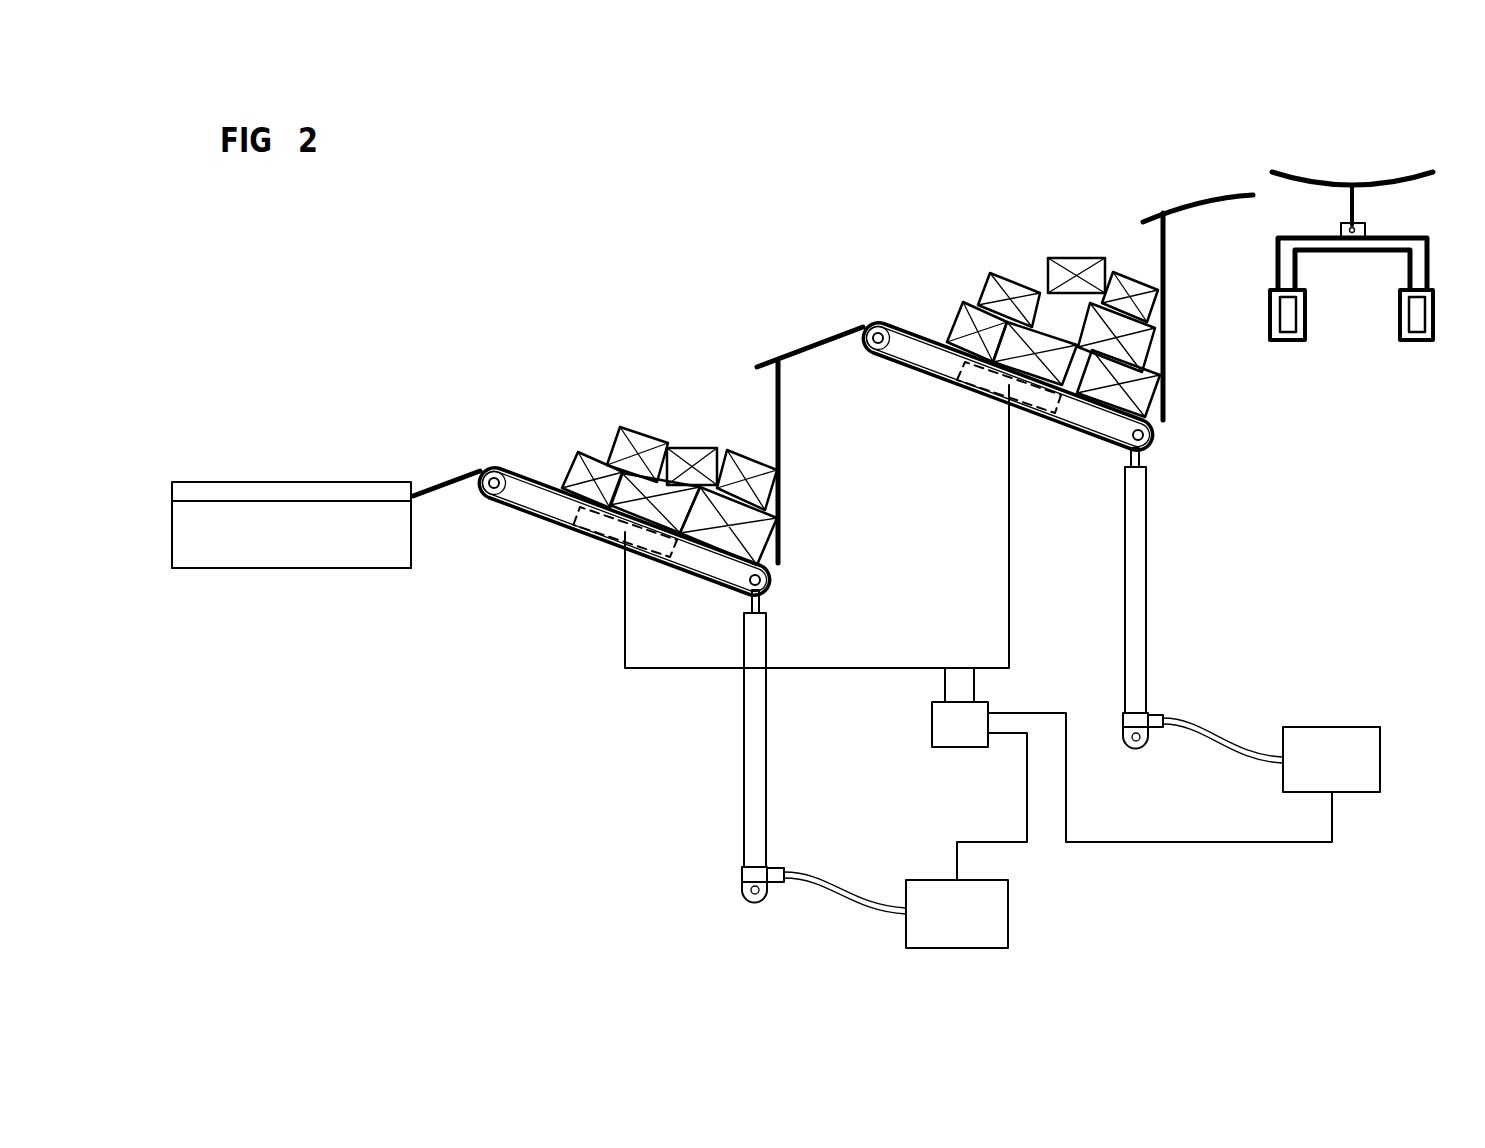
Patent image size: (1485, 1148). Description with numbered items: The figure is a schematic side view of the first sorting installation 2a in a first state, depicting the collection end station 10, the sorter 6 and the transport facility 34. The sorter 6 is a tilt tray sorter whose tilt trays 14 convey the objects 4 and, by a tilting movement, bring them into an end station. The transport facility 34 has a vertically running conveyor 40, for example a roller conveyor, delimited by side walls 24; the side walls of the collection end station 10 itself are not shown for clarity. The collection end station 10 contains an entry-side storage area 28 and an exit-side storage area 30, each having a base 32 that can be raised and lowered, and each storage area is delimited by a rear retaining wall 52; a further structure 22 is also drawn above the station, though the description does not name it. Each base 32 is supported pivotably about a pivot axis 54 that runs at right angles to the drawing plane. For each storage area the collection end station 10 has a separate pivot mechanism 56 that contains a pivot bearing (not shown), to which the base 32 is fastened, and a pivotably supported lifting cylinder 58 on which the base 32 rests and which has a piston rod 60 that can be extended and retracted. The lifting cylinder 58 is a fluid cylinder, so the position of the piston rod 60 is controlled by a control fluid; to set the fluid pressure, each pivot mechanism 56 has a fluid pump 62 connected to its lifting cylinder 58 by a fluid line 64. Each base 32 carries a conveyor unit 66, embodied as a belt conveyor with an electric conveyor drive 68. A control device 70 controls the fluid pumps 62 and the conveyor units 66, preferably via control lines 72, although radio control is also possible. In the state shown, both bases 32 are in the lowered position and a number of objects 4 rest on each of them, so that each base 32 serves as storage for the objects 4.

The first sorting installation 2a is at (862, 198).
The objects 4 is at (628, 437).
The sorter 6 is at (1414, 125).
The collection end station 10 is at (582, 250).
The tilt trays 14 is at (1305, 170).
The roof 22 is at (818, 343).
The side walls 24 is at (178, 494).
The entry-side storage area 28 is at (1003, 240).
The exit-side storage area 30 is at (678, 375).
The base 32 is at (522, 462).
The transport facility 34 is at (282, 592).
The conveyor 40 is at (178, 553).
The rear retaining wall 52 is at (781, 490).
The pivot axis 54 is at (493, 500).
The pivot mechanism 56 is at (698, 846).
The lifting cylinder 58 is at (767, 797).
The piston rod 60 is at (768, 597).
The fluid pump 62 is at (1010, 920).
The fluid line 64 is at (838, 898).
The conveyor unit 66 is at (700, 583).
The conveyor drive 68 is at (592, 540).
The control device 70 is at (930, 722).
The control lines 72 is at (648, 672).